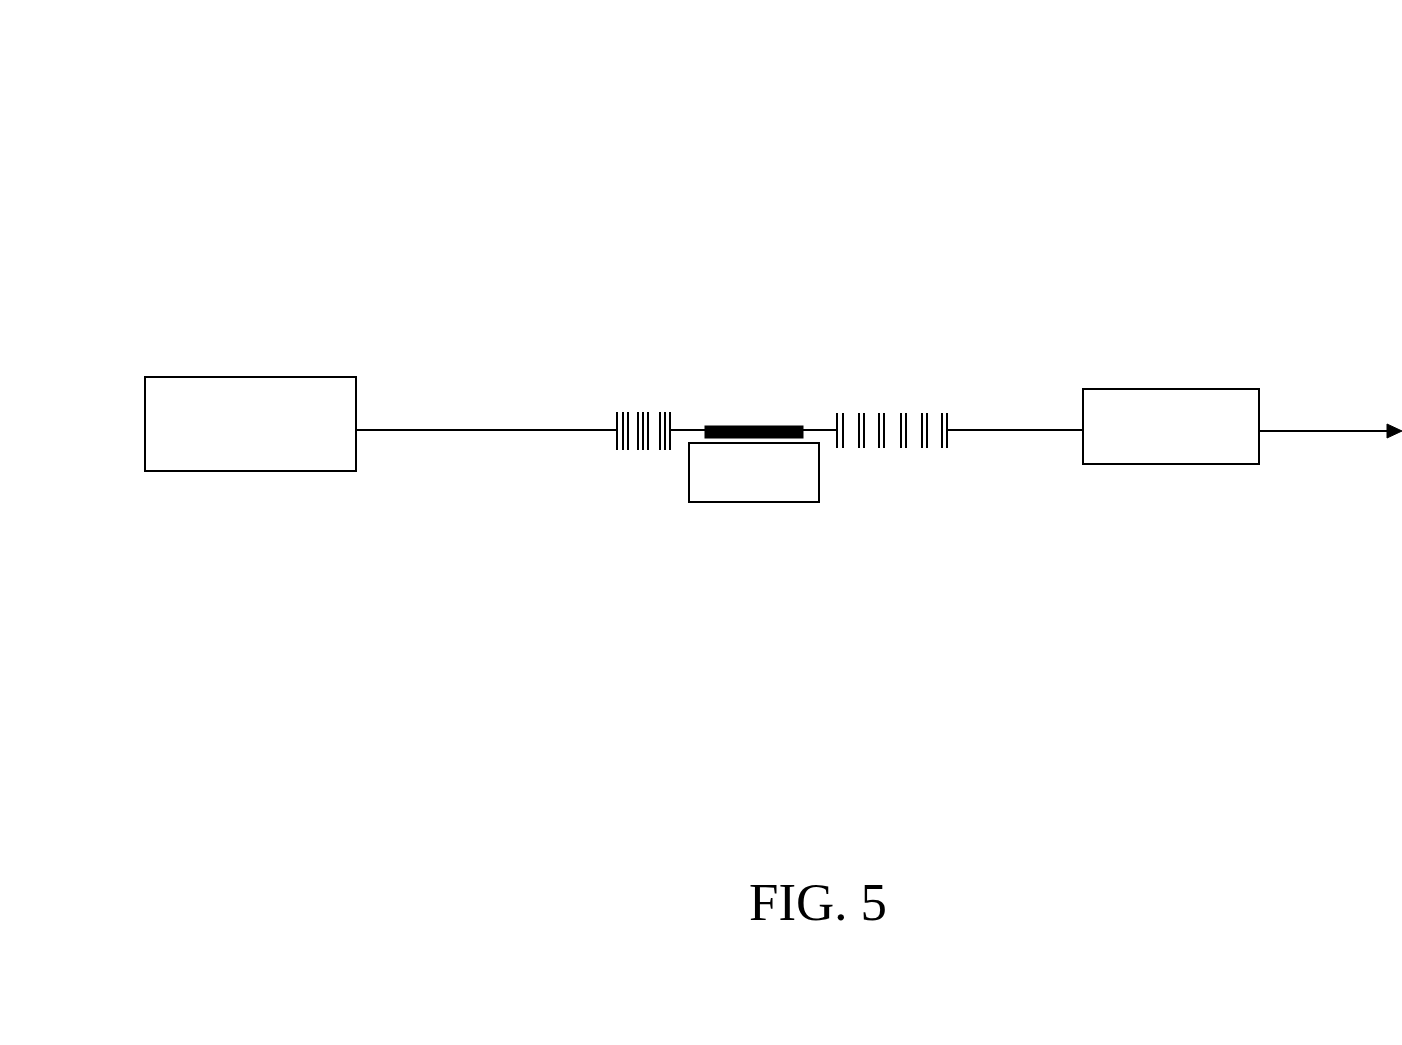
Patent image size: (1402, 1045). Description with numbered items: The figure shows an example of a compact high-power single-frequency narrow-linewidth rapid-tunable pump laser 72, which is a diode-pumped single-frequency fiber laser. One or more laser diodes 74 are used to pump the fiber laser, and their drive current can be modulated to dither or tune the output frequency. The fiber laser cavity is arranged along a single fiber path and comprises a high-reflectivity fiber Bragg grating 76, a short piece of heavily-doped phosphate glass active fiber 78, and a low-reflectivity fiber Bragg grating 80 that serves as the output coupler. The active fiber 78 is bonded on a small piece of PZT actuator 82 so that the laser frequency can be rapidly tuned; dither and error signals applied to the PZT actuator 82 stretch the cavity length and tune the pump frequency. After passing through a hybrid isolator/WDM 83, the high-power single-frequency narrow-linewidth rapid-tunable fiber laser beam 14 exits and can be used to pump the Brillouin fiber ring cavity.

The pump laser 72 is at (490, 207).
The laser diode 74 is at (259, 377).
The high-reflectivity fiber Bragg grating 76 is at (640, 412).
The active fiber 78 is at (749, 426).
The low-reflectivity fiber Bragg grating 80 is at (872, 412).
The PZT actuator 82 is at (773, 510).
The hybrid isolator/WDM 83 is at (1160, 395).
The fiber laser beam 14 is at (1333, 428).